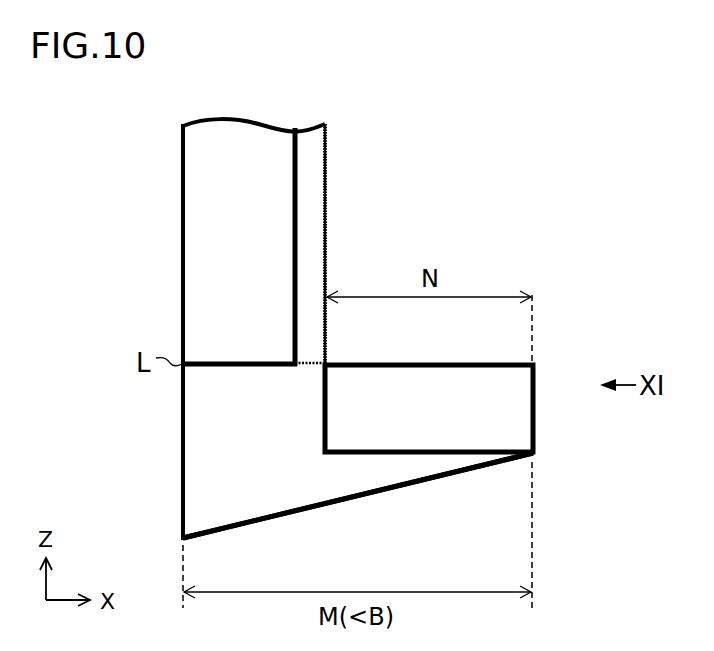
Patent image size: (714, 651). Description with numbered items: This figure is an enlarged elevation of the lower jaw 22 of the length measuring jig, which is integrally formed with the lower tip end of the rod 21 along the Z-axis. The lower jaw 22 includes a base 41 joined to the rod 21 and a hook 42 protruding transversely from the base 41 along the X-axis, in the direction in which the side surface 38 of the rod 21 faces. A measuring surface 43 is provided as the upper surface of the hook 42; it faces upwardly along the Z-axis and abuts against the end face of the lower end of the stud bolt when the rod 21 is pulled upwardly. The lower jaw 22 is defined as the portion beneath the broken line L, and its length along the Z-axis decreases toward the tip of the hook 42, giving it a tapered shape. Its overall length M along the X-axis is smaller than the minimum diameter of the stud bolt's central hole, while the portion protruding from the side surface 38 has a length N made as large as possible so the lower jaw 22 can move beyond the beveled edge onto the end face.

The rod 21 is at (180, 215).
The lower jaw 22 is at (352, 508).
The side surface 38 is at (327, 212).
The base 41 is at (182, 445).
The hook 42 is at (460, 474).
The measuring surface 43 is at (443, 363).